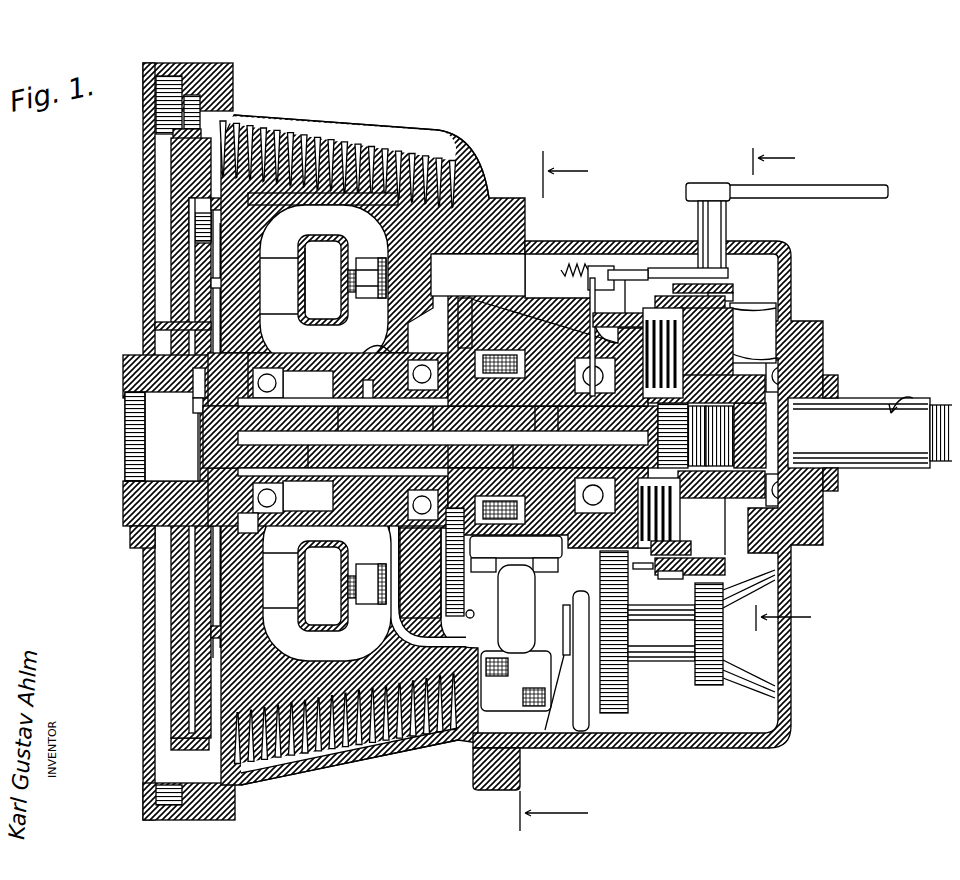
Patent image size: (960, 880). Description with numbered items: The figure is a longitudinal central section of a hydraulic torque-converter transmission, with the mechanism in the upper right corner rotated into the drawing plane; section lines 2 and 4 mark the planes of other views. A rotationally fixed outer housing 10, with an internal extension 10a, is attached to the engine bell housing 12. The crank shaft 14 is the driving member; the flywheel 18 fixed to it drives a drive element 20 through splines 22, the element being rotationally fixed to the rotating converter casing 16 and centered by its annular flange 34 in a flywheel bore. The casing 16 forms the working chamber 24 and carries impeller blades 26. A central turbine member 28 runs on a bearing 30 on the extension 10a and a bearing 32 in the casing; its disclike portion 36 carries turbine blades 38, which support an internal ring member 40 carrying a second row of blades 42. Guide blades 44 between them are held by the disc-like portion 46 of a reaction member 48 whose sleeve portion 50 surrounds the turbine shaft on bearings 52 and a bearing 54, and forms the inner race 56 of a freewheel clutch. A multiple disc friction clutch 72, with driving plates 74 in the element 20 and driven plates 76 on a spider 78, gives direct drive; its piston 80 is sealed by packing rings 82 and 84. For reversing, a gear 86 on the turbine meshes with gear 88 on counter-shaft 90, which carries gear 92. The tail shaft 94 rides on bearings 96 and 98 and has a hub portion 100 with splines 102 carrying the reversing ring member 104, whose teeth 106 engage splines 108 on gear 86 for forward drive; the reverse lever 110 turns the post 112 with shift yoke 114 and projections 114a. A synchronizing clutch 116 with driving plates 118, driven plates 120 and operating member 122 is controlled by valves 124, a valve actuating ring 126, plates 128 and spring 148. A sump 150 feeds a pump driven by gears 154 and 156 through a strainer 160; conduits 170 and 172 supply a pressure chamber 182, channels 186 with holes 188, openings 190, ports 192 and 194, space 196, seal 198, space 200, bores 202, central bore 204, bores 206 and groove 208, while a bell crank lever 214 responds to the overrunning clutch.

The outer housing 10 is at (481, 230).
The internal extension of the fixed housing 10a is at (525, 342).
The bell housing or fixed part 12 is at (136, 122).
The crank or driving shaft 14 is at (118, 425).
The rotating converter casing 16 is at (384, 205).
The engine flywheel 18 is at (176, 238).
The drive element 20 is at (203, 278).
The meshing teeth or splines 22 is at (203, 196).
The chamber 24 is at (310, 205).
The pump or impeller blades 26 is at (270, 266).
The turbine member 28 is at (312, 395).
The bearing 30 is at (593, 257).
The bearing 32 is at (298, 362).
The annular flange 34 is at (146, 456).
The disclike portion 36 is at (356, 350).
The turbine blades 38 is at (345, 296).
The internal ring member 40 is at (331, 249).
The turbine blades 42 is at (355, 246).
The reaction or guide blades 44 is at (340, 274).
The disc-like portion 46 is at (410, 322).
The reaction member 48 is at (458, 330).
The hollow shaft or sleeve portion 50 is at (430, 437).
The bearings 52 is at (459, 437).
The bearing 54 is at (460, 447).
The inner race 56 is at (457, 578).
The multiple disc friction clutch 72 is at (215, 592).
The driving plates 74 is at (210, 626).
The driven plates 76 is at (240, 518).
The disc part or spider 78 is at (295, 447).
The operating member 80 is at (216, 560).
The packing ring 82 is at (203, 256).
The packing ring 84 is at (216, 300).
The gear 86 is at (603, 276).
The gear 88 is at (593, 690).
The counter-shaft 90 is at (660, 650).
The gear 92 is at (710, 668).
The tail shaft 94 is at (864, 400).
The bearing 96 is at (795, 368).
The bearing 98 is at (727, 435).
The hub portion 100 is at (690, 488).
The external splines 102 is at (700, 556).
The annular reversing ring member 104 is at (679, 572).
The teeth 106 is at (646, 572).
The teeth or splines 108 is at (640, 315).
The reverse lever 110 is at (820, 178).
The reversing post 112 is at (714, 212).
The shift yoke 114 is at (728, 276).
The projections 114a is at (724, 287).
The synchronizing clutch 116 is at (762, 303).
The driving plates 118 is at (672, 512).
The driven plates 120 is at (705, 298).
The clutch operating member 122 is at (705, 330).
The control valves 124 is at (594, 308).
The valve actuating ring 126 is at (555, 600).
The plates 128 is at (672, 238).
The spring 148 is at (563, 256).
The sump 150 is at (518, 718).
The gear 154 is at (472, 336).
The gear 156 is at (460, 609).
The strainer 160 is at (516, 638).
The conduit 170 is at (555, 572).
The conduit 172 is at (515, 495).
The pressure chamber 182 is at (480, 500).
The grooves or channels 186 is at (668, 435).
The radial holes 188 is at (550, 426).
The radial openings 190 is at (373, 375).
The ports 192 is at (353, 426).
The ports 194 is at (262, 353).
The space 196 is at (185, 368).
The piston ring seal 198 is at (135, 392).
The chamber or space 200 is at (172, 412).
The radially extending bores 202 is at (147, 318).
The axially central bore 204 is at (293, 497).
The radial bores 206 is at (525, 426).
The annular external groove 208 is at (637, 573).
The bell crank type of lever 214 is at (712, 352).
The section line 2- 2 is at (544, 491).
The section line 4- 4 is at (772, 390).